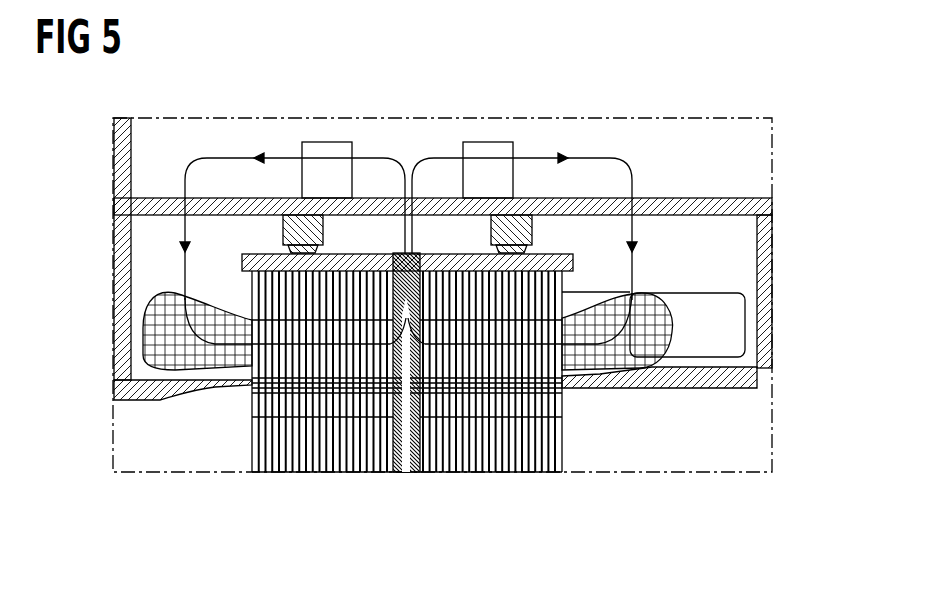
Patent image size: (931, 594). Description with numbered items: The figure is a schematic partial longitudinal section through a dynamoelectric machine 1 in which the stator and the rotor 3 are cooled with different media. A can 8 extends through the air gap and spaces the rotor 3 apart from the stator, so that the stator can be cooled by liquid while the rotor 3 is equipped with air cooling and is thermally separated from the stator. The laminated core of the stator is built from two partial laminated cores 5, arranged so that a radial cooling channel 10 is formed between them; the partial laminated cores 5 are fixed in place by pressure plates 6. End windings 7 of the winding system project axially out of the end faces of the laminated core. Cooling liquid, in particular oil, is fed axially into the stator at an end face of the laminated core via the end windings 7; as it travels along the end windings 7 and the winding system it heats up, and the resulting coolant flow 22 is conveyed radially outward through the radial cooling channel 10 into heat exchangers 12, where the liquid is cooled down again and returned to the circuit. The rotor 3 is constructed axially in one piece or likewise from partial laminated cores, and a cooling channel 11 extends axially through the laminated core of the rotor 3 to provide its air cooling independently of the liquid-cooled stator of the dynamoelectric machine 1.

The dynamoelectric machine 1 is at (676, 98).
The rotor 3 is at (517, 470).
The partial laminated cores 5 is at (327, 473).
The pressure plates 6 is at (565, 292).
The end windings 7 is at (152, 322).
The can 8 is at (170, 395).
The radial cooling channel 10 is at (407, 457).
The cooling channel 11 is at (357, 455).
The heat exchangers 12 is at (327, 142).
The coolant flow 22 is at (227, 157).